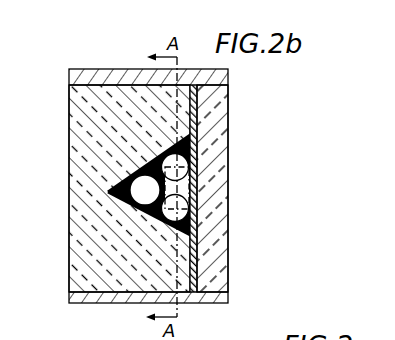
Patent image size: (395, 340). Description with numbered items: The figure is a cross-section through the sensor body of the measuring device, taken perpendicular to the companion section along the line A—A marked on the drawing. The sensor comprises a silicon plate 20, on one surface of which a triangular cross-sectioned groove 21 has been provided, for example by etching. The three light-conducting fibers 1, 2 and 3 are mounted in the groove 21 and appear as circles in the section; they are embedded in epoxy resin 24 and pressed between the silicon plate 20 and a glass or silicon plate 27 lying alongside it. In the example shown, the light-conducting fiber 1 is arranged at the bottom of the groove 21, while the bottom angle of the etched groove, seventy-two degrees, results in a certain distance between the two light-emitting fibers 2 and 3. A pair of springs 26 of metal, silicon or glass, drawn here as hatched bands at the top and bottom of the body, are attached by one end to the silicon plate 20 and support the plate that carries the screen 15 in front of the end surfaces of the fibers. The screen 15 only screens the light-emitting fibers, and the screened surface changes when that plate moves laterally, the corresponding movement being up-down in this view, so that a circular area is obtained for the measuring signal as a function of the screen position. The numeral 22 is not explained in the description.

The light-conducting fiber 1 is at (142, 157).
The light-conducting fiber 2 is at (158, 143).
The light-conducting fiber 3 is at (172, 226).
The screen 15 is at (196, 212).
The silicon plate 20 is at (118, 284).
The groove 21 is at (147, 217).
The upper raceway surface 22 is at (122, 185).
The epoxy resin 24 is at (190, 243).
The springs 26 is at (99, 76).
The glass or silicon plate 27 is at (212, 273).